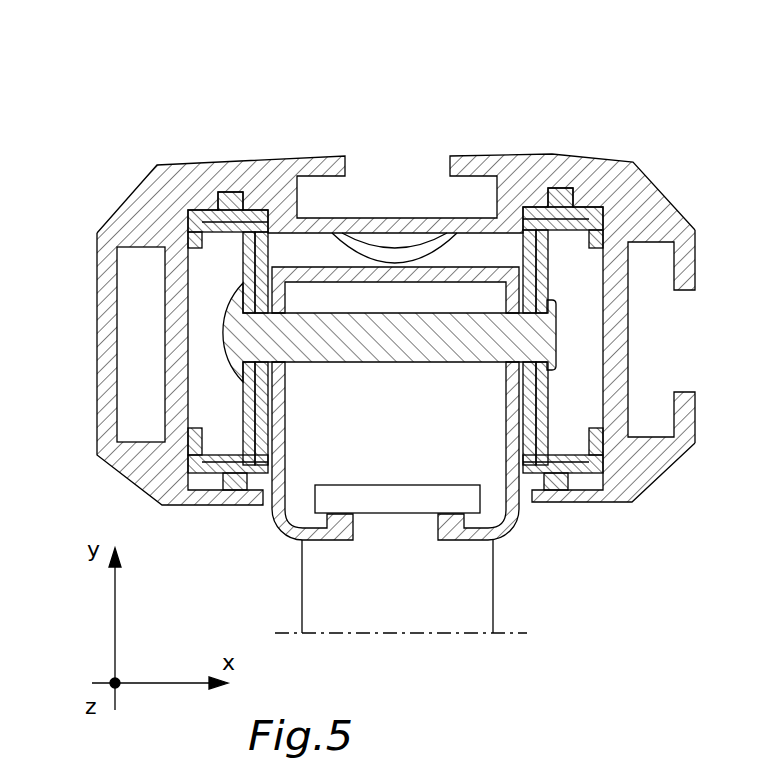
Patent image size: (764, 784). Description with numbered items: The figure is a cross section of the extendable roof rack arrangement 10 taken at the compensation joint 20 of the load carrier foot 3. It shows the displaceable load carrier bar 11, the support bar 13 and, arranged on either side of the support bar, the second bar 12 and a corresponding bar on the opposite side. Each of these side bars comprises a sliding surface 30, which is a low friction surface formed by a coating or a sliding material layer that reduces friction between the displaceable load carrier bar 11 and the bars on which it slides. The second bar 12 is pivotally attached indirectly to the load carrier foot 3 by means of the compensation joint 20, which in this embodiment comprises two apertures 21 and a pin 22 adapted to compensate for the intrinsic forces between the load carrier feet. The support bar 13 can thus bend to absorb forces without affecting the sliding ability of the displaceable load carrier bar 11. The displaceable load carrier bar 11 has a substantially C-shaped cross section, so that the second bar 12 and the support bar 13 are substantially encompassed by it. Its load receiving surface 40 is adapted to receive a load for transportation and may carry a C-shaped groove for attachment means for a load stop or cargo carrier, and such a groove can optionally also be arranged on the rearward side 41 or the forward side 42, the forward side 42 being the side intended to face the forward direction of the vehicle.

The extendable roof rack arrangement 10 is at (428, 89).
The displaceable load carrier bar 11 is at (496, 149).
The second bar 12 is at (262, 252).
The support bar 13 is at (512, 513).
The compensation joint 20 is at (228, 192).
The apertures 21 is at (288, 312).
The pin 22 is at (420, 345).
The sliding surface 30 is at (560, 189).
The load receiving surface 40 is at (255, 157).
The rearward side 41 is at (690, 262).
The forward side 42 is at (100, 293).
The load carrier foot 3 is at (330, 580).